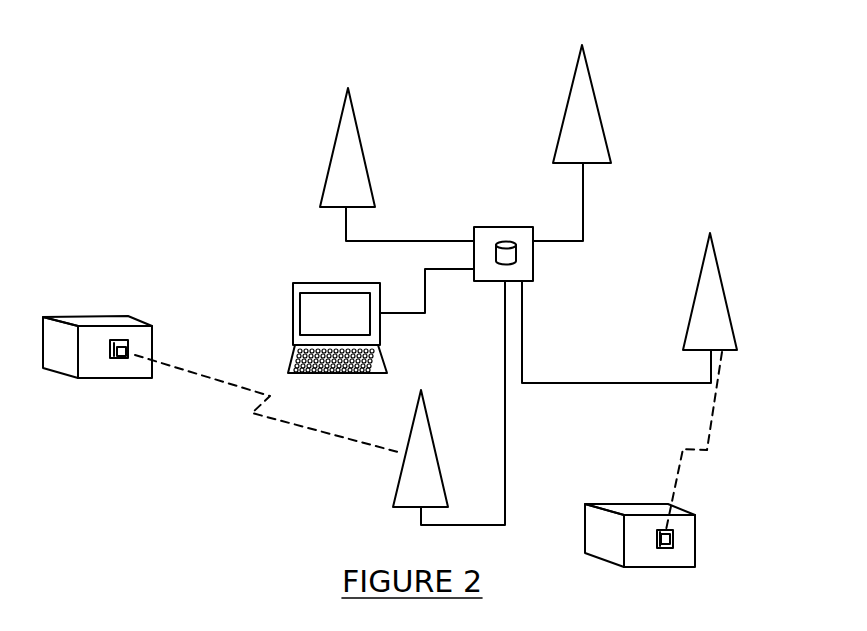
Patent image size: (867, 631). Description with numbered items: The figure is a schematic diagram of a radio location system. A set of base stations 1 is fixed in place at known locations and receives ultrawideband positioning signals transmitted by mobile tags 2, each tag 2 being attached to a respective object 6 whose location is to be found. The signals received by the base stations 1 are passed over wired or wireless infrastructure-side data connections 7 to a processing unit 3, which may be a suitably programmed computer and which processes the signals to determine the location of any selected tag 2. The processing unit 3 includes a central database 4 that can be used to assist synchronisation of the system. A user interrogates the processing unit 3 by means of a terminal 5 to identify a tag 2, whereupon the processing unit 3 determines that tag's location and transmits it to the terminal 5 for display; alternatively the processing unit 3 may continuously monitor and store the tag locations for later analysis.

The base station 1 is at (352, 137).
The tag 2 is at (121, 360).
The processing unit 3 is at (487, 227).
The central database 4 is at (514, 256).
The terminal 5 is at (293, 318).
The object 6 is at (88, 322).
The connection 7 is at (410, 240).